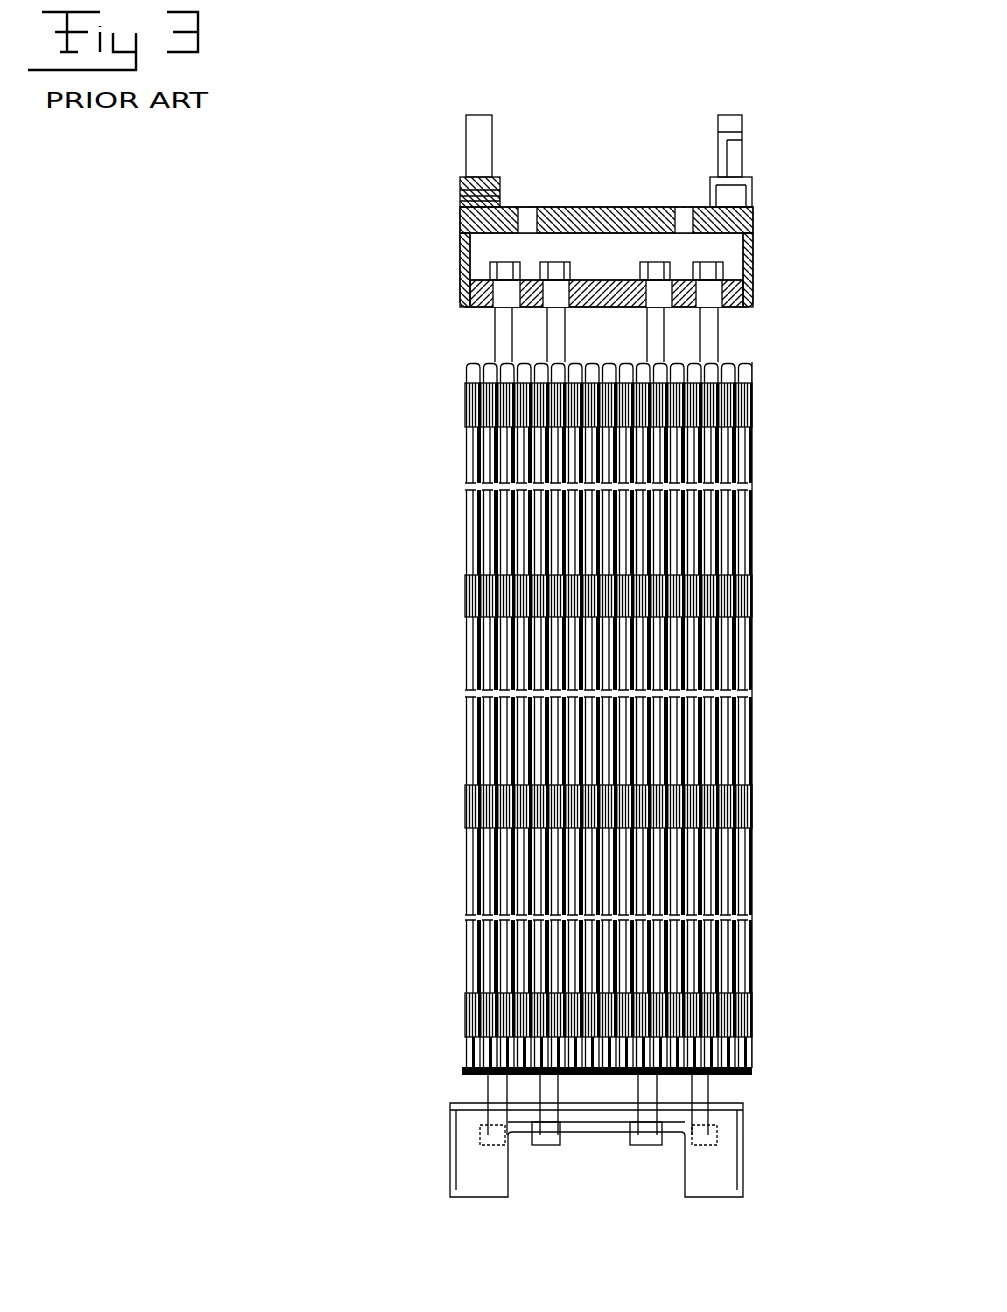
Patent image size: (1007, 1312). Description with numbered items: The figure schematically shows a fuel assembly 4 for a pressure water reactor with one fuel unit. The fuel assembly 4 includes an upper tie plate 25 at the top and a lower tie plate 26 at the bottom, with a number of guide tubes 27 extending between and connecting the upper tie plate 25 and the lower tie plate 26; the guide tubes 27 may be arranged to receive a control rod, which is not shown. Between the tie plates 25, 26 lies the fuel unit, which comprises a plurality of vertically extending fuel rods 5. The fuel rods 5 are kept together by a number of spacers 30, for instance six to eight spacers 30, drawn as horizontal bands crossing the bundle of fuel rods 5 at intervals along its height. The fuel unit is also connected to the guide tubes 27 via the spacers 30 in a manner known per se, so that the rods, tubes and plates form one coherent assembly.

The fuel assembly 4 is at (345, 268).
The fuel rods 5 is at (505, 540).
The upper tie plate 25 is at (755, 294).
The lower tie plate 26 is at (475, 1162).
The guide tubes 27 is at (558, 333).
The spacers 30 is at (470, 398).